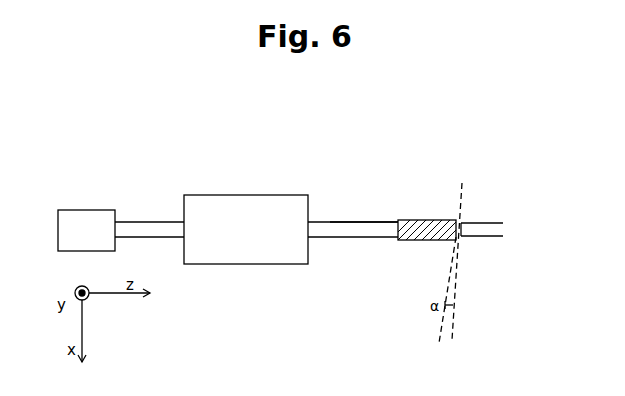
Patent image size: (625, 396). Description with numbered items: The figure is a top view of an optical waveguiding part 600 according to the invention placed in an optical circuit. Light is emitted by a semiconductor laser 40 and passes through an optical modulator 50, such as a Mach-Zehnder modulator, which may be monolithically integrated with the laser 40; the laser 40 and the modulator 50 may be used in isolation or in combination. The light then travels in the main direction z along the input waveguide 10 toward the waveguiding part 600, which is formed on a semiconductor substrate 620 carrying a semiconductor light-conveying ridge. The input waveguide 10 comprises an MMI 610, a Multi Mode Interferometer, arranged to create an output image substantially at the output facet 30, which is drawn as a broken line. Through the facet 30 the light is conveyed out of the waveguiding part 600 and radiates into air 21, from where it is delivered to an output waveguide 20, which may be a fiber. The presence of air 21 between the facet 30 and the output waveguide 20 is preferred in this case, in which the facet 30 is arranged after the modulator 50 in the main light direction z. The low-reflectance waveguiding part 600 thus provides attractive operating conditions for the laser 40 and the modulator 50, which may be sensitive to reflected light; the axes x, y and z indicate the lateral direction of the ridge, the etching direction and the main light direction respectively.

The input waveguide 10 is at (372, 221).
The output waveguide 20 is at (501, 238).
The air 21 is at (456, 241).
The output facet 30 is at (471, 261).
The laser 40 is at (86, 230).
The modulator 50 is at (246, 229).
The optical waveguiding part 600 is at (418, 180).
The MMI 610 is at (403, 241).
The semiconductor substrate 620 is at (364, 252).